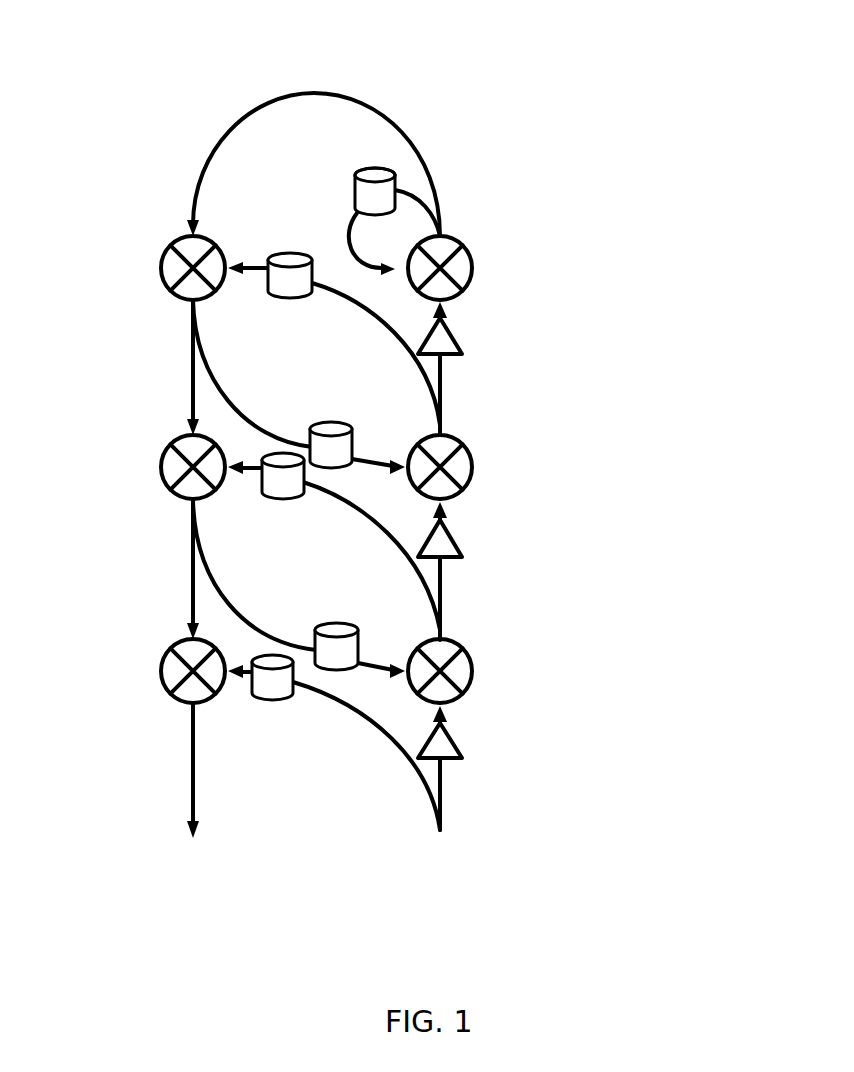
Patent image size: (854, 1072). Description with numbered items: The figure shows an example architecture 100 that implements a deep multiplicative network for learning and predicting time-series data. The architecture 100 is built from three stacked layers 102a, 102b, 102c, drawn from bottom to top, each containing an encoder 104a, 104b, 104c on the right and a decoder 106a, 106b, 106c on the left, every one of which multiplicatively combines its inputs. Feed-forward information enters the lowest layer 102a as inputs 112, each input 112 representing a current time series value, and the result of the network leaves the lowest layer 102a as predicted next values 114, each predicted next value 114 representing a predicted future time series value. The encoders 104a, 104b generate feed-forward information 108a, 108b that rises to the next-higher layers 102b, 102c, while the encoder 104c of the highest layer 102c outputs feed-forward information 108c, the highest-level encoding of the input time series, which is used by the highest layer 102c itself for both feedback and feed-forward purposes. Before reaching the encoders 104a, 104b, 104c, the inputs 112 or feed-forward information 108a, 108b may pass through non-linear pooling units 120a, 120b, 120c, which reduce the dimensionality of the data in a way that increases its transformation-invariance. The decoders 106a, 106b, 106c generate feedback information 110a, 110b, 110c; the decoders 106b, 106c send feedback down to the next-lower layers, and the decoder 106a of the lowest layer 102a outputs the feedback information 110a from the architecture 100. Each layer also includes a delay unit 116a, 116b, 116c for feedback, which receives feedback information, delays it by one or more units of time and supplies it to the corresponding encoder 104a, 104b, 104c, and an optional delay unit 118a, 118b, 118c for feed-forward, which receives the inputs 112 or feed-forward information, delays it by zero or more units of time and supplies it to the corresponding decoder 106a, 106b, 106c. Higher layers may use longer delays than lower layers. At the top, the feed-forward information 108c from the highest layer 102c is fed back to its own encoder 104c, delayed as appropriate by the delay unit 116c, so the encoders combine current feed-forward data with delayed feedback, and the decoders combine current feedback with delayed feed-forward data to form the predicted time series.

The architecture 100 is at (107, 53).
The lowest layer 102a is at (668, 673).
The middle layer 102b is at (668, 469).
The highest layer 102c is at (668, 266).
The encoder 104a is at (477, 680).
The encoder 104b is at (477, 478).
The encoder 104c is at (477, 278).
The decoder 106a is at (158, 672).
The decoder 106b is at (158, 470).
The decoder 106c is at (158, 267).
The feed-forward information 108a is at (440, 625).
The feed-forward information 108b is at (440, 420).
The feed-forward information 108c is at (443, 228).
The feedback information 110a is at (190, 745).
The feedback information 110b is at (190, 515).
The feedback information 110c is at (190, 312).
The input 112 is at (488, 900).
The predicted next value 114 is at (243, 917).
The delay unit 116a is at (333, 625).
The delay unit 116b is at (333, 420).
The delay unit 116c is at (350, 197).
The delay unit 118a is at (282, 700).
The delay unit 118b is at (293, 500).
The delay unit 118c is at (285, 253).
The non-linear pooling unit 120a is at (450, 744).
The non-linear pooling unit 120b is at (450, 542).
The non-linear pooling unit 120c is at (450, 330).